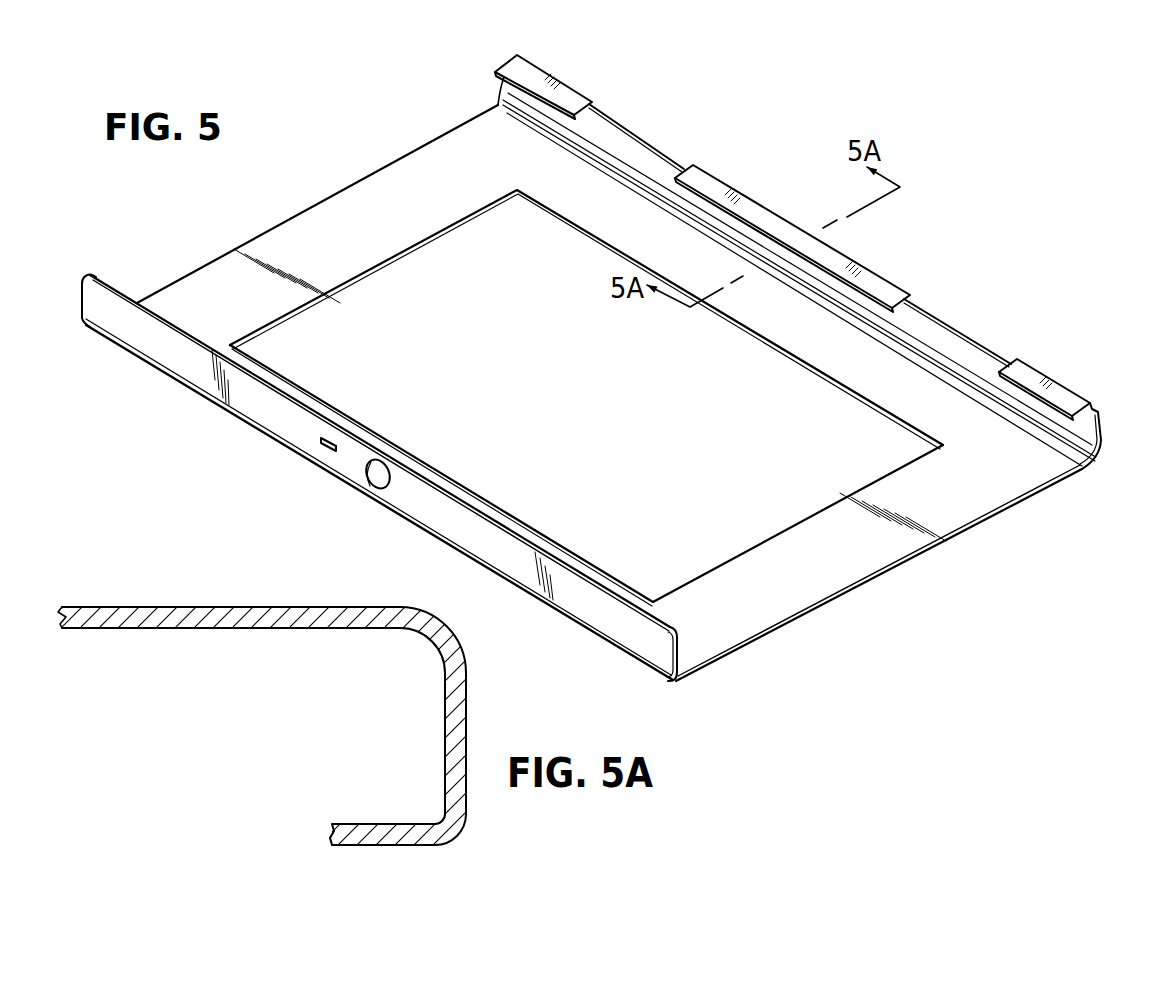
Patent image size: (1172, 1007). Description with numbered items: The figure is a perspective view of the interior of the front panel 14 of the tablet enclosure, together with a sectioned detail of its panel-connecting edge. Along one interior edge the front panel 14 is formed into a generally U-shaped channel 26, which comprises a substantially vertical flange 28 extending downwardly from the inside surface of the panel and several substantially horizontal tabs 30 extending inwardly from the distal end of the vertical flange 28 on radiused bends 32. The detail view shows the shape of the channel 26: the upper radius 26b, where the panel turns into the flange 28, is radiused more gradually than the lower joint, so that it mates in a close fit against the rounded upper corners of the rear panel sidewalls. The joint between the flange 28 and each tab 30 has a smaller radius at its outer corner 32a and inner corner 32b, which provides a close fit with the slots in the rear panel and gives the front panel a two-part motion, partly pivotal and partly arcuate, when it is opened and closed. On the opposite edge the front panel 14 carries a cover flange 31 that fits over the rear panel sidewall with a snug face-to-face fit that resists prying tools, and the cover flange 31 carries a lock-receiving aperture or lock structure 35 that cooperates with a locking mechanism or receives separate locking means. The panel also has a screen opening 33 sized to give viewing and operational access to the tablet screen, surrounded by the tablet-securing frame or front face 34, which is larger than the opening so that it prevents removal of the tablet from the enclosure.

In FIG. 5, the front panel 14 is at (982, 212).
In FIG. 5A, the front panel 14 is at (214, 613).
In FIG. 5, the U-shaped channel 26 is at (1103, 458).
In FIG. 5A, the U-shaped channel 26 is at (378, 734).
In FIG. 5A, the upper radius 26b is at (420, 648).
In FIG. 5, the vertical flange 28 is at (638, 155).
In FIG. 5A, the vertical flange 28 is at (457, 713).
In FIG. 5, the tab 30 is at (560, 97).
In FIG. 5A, the tab 30 is at (377, 840).
In FIG. 5, the cover flange 31 is at (410, 497).
In FIG. 5, the radiused bend 32 is at (970, 387).
In FIG. 5A, the radiused bend 32 is at (447, 825).
In FIG. 5A, the outer corner 32a is at (453, 838).
In FIG. 5A, the inner corner 32b is at (438, 818).
In FIG. 5, the screen opening 33 is at (773, 537).
In FIG. 5, the front face 34 is at (390, 197).
In FIG. 5, the lock structure 35 is at (372, 470).